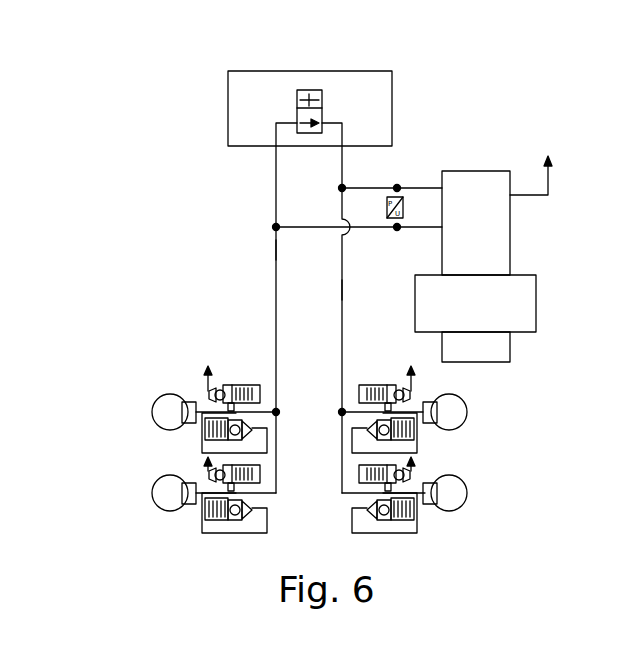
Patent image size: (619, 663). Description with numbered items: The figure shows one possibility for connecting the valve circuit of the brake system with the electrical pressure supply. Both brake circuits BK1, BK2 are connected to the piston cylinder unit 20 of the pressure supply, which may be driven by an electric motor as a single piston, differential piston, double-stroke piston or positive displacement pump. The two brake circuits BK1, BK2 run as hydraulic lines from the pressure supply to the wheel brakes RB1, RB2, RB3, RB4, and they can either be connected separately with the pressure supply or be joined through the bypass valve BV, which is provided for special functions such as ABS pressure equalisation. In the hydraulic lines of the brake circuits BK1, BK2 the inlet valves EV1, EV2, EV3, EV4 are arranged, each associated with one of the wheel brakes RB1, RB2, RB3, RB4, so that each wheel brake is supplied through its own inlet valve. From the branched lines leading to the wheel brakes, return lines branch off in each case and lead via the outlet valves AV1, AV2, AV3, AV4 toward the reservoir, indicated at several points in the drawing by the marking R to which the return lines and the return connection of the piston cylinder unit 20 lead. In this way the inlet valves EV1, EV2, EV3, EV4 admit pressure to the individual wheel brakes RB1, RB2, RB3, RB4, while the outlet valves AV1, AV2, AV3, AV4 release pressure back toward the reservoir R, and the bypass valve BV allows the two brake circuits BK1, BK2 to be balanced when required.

The bypass valve BV is at (322, 97).
The piston cylinder unit 20 is at (534, 265).
The reservoir return R is at (540, 175).
The brake circuit BK1 is at (342, 290).
The brake circuit BK2 is at (276, 248).
The wheel brake RB1 is at (465, 413).
The wheel brake RB2 is at (165, 410).
The wheel brake RB3 is at (466, 498).
The wheel brake RB4 is at (165, 492).
The outlet valve AV1 is at (370, 383).
The outlet valve AV2 is at (250, 385).
The outlet valve AV3 is at (400, 487).
The outlet valve AV4 is at (262, 477).
The inlet valve EV1 is at (414, 434).
The inlet valve EV2 is at (204, 436).
The inlet valve EV3 is at (396, 522).
The inlet valve EV4 is at (215, 523).